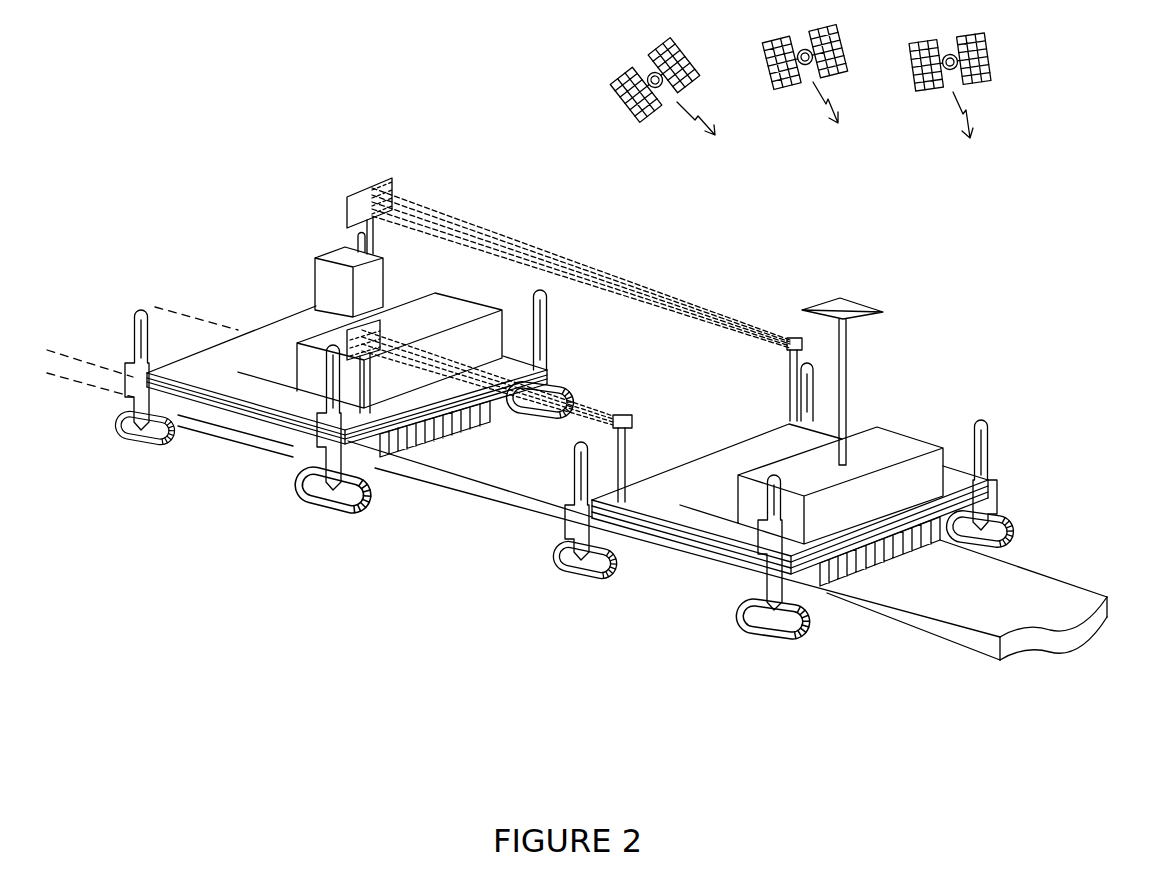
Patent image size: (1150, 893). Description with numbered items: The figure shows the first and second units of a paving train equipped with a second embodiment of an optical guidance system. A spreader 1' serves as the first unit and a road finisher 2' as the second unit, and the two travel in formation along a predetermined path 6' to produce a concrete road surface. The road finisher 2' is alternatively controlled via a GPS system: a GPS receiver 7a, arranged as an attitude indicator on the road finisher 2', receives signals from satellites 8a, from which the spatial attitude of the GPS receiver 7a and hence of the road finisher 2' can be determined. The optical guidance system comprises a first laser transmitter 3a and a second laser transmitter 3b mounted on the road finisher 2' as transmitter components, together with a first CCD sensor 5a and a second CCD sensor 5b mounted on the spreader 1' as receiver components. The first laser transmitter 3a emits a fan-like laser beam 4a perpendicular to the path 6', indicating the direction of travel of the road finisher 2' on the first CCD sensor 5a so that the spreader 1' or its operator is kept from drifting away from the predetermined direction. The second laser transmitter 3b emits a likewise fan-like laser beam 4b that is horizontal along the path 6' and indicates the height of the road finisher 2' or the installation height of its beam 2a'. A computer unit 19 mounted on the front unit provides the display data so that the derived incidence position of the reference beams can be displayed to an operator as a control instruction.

The spreader 1' is at (344, 327).
The road finisher 2' is at (783, 466).
The beam 2a' is at (878, 594).
The first laser transmitter 3a is at (787, 340).
The second laser transmitter 3b is at (633, 416).
The fan-like laser beam 4a is at (525, 225).
The fan-like laser beam 4b is at (607, 400).
The first CCD sensor 5a is at (360, 198).
The second CCD sensor 5b is at (380, 324).
The predetermined path 6' is at (142, 326).
The GPS receiver 7a is at (860, 306).
The satellites 8a is at (567, 58).
The computer unit 19 is at (346, 303).